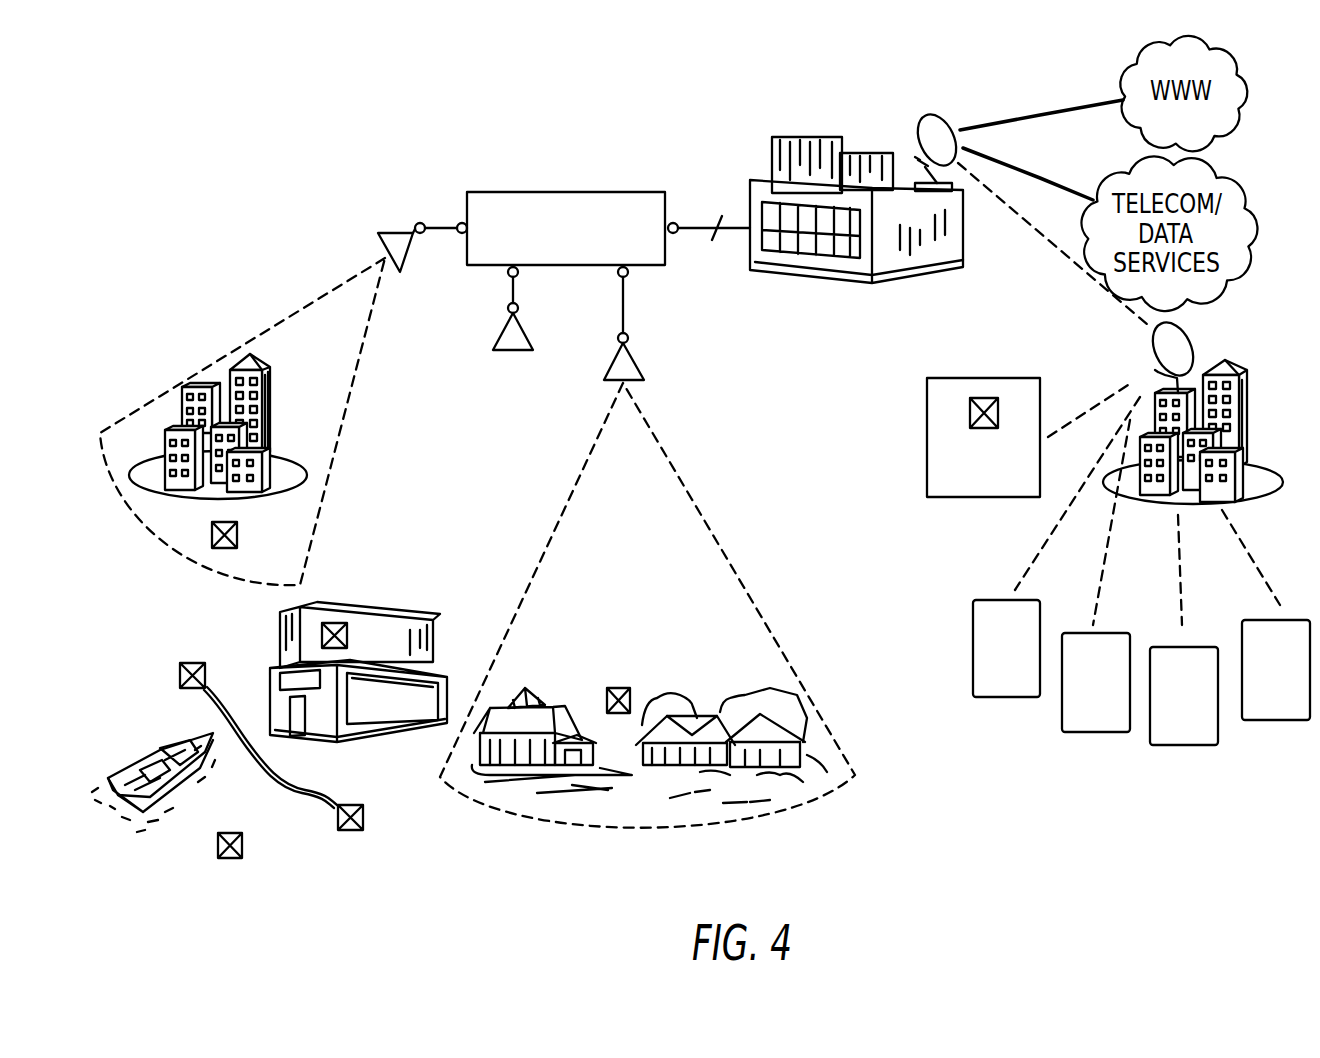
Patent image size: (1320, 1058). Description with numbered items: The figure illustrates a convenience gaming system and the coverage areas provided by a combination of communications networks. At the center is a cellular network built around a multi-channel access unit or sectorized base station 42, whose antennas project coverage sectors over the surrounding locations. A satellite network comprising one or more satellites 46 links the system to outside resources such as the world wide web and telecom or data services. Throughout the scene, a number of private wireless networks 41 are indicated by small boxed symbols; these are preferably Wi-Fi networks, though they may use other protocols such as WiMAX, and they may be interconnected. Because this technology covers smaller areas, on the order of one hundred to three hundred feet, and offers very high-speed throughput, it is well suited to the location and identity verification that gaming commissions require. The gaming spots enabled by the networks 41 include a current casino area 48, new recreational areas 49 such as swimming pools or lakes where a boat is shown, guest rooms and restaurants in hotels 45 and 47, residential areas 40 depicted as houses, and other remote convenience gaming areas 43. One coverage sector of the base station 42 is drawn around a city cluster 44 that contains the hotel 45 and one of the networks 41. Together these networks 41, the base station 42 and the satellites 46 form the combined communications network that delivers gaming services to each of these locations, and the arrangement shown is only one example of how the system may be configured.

The residential areas 40 is at (553, 700).
The networks 41 is at (237, 535).
The multi-channel access unit or sectorized base station 42 is at (513, 192).
The remote convenience gaming areas 43 is at (978, 372).
The urban area 44 is at (232, 392).
The hotels 45 is at (260, 357).
The satellites 46 is at (925, 122).
The hotels 47 is at (1235, 365).
The current casino area 48 is at (365, 607).
The recreational areas 49 is at (178, 848).